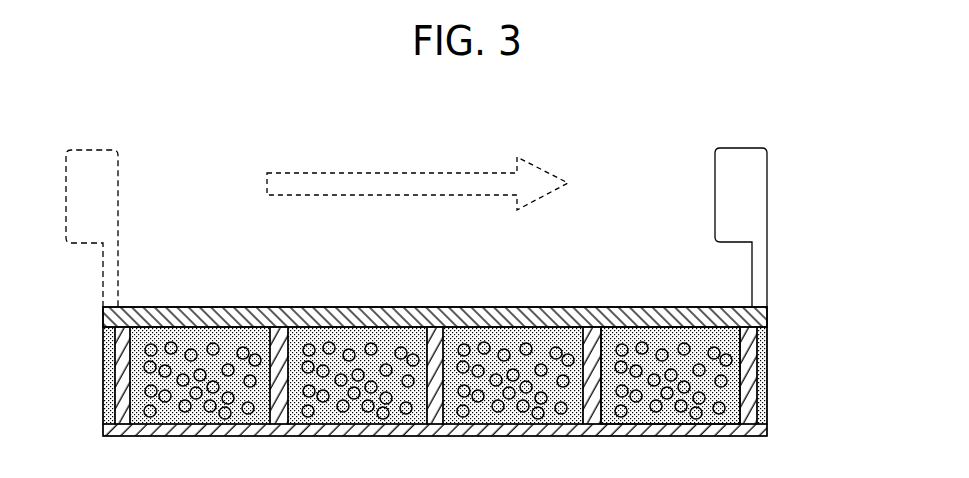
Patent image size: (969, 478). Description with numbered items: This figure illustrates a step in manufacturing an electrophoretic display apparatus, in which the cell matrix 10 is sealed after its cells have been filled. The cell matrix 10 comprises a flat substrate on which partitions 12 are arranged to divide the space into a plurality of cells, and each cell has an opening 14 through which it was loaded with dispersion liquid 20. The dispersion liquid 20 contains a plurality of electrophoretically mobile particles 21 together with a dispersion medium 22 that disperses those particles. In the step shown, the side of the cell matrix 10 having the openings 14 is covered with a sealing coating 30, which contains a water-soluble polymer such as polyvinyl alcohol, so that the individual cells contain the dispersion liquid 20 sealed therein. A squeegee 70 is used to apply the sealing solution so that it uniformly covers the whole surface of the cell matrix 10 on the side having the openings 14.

The cell matrix 10 is at (772, 378).
The partitions 12 is at (437, 325).
The opening 14 is at (503, 317).
The dispersion liquid 20 is at (680, 248).
The electrophoretically mobile particles 21 is at (619, 342).
The dispersion medium 22 is at (667, 340).
The sealing coating 30 is at (565, 306).
The squeegee 70 is at (92, 160).